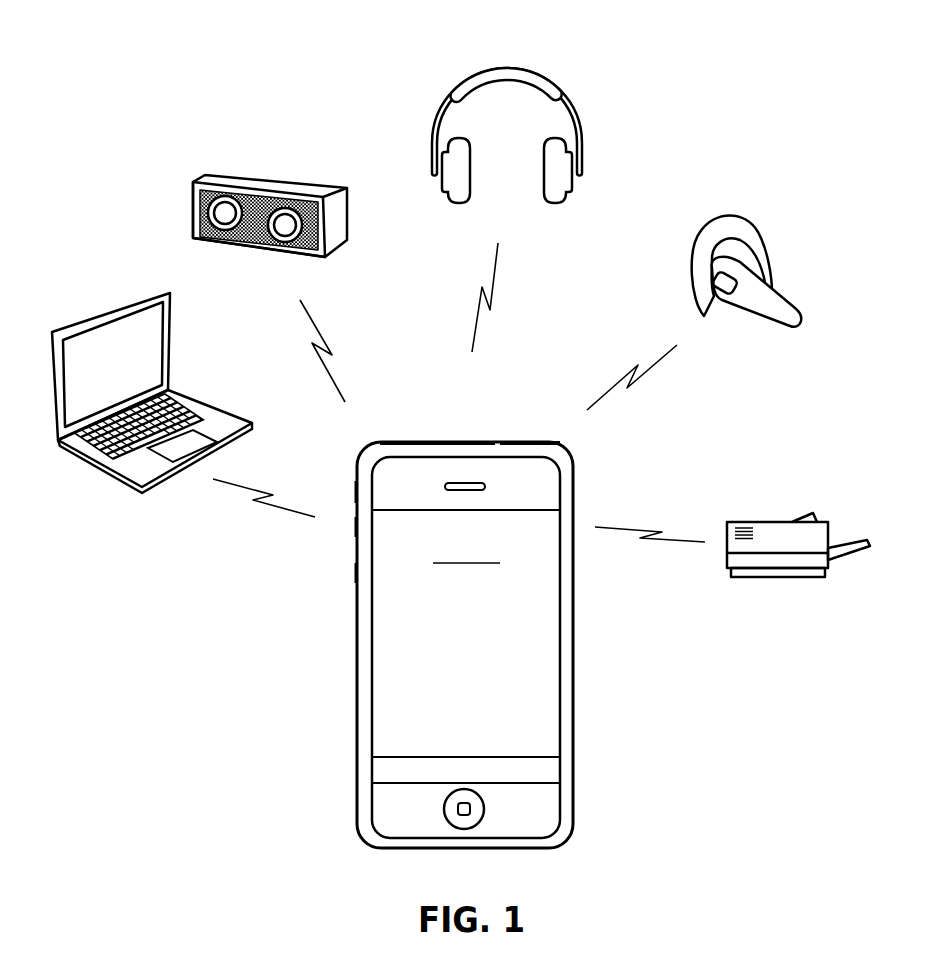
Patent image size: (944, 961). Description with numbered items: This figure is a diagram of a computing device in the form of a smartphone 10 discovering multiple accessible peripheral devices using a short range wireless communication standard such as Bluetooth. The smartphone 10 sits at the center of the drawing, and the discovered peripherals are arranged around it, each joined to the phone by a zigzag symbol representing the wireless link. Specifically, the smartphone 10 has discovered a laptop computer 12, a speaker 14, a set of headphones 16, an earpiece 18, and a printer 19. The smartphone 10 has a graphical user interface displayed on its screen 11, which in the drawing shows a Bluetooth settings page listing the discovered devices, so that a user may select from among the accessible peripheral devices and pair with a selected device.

The smartphone 10 is at (421, 442).
The screen 11 is at (560, 606).
The laptop computer 12 is at (77, 322).
The speaker 14 is at (218, 173).
The set of headphones 16 is at (488, 68).
The earpiece 18 is at (730, 220).
The printer 19 is at (760, 520).